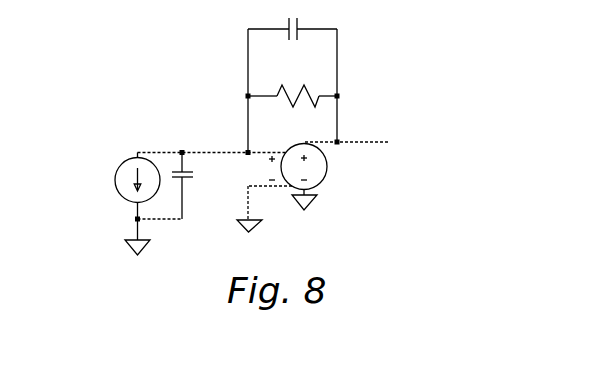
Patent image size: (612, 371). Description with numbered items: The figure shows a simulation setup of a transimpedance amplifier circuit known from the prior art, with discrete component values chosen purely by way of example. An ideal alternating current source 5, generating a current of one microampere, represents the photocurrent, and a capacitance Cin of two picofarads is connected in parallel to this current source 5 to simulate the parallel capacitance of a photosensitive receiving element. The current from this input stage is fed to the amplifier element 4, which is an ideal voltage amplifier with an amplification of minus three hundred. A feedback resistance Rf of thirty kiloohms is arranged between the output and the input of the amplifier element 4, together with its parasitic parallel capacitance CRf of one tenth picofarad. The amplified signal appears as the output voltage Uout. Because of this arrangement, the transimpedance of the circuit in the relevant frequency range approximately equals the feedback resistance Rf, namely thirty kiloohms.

The amplifier element 4 is at (329, 178).
The current source 5 is at (93, 178).
The capacitance Cin is at (144, 147).
The parasitic parallel capacitance CRf is at (309, 22).
The feedback resistance Rf is at (320, 87).
The output voltage Uout is at (368, 145).